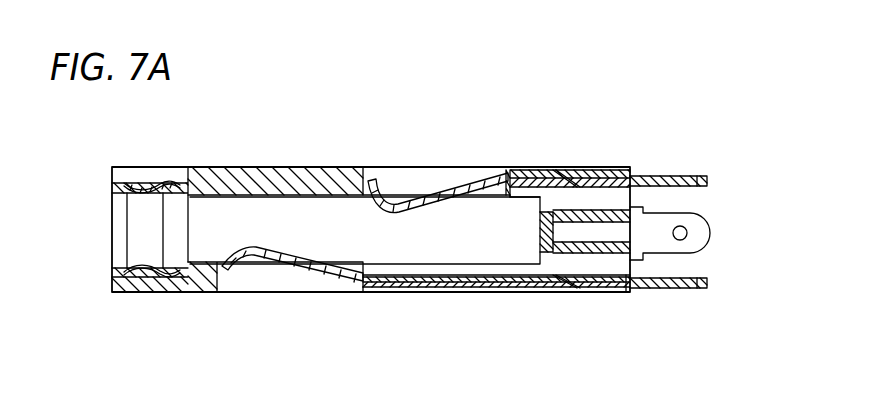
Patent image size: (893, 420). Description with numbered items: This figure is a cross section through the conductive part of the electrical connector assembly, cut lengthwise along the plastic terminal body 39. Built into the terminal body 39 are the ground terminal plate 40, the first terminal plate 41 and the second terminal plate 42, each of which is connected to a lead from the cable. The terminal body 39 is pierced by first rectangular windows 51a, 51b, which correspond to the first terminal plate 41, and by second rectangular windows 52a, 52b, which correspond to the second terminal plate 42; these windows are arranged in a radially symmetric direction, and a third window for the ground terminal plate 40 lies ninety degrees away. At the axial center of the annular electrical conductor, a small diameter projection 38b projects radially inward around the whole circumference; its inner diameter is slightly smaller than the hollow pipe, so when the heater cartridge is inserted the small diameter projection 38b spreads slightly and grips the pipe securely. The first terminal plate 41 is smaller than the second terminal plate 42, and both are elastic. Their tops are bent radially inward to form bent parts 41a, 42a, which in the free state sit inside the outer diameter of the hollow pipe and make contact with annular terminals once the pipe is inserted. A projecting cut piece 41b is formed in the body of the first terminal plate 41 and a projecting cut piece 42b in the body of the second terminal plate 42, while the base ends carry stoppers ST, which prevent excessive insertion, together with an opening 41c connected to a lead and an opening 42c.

The small diameter projection 38b is at (150, 188).
The terminal body 39 is at (253, 177).
The ground terminal plate 40 is at (707, 232).
The first terminal plate 41 is at (568, 143).
The bent part 41a is at (405, 176).
The projecting cut piece 41b is at (575, 177).
The opening 41c is at (682, 177).
The second terminal plate 42 is at (490, 316).
The bent part 42a is at (250, 257).
The projecting cut piece 42b is at (572, 293).
The opening 42c is at (713, 282).
The first rectangular window 51a is at (462, 177).
The first rectangular window 51b is at (562, 173).
The second rectangular window 52a is at (310, 280).
The second rectangular window 52b is at (558, 292).
The stopper ST is at (638, 175).